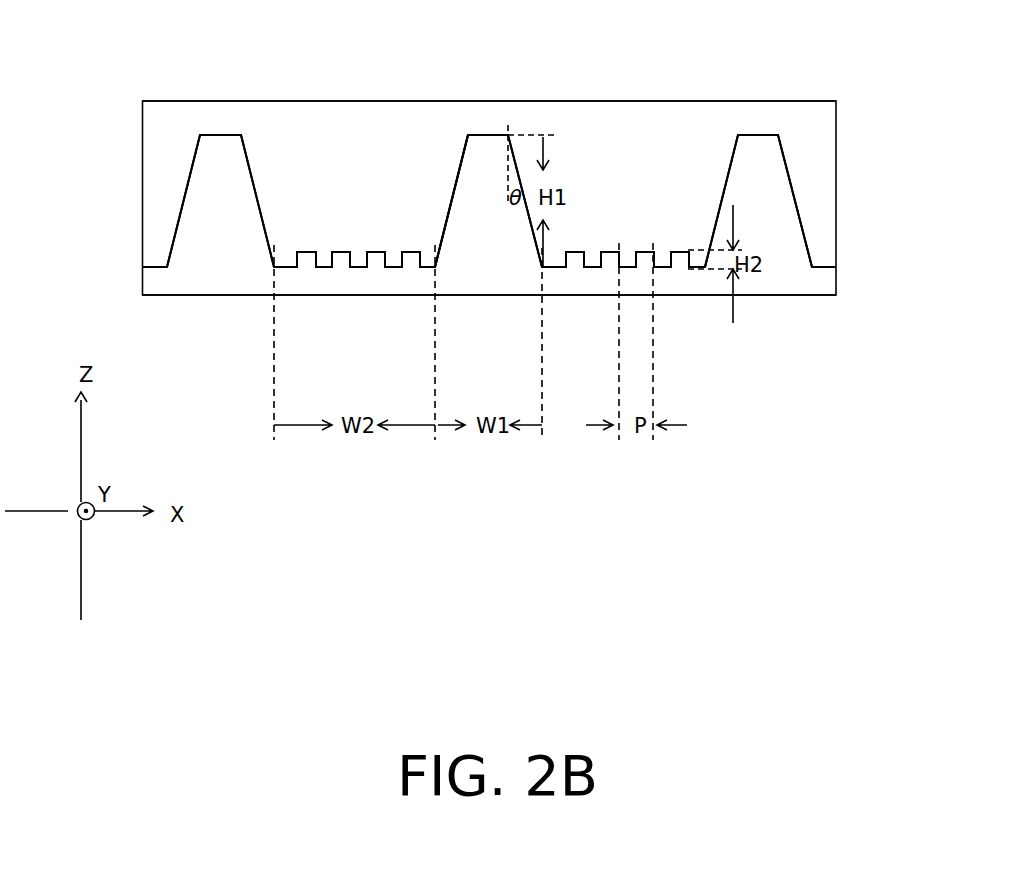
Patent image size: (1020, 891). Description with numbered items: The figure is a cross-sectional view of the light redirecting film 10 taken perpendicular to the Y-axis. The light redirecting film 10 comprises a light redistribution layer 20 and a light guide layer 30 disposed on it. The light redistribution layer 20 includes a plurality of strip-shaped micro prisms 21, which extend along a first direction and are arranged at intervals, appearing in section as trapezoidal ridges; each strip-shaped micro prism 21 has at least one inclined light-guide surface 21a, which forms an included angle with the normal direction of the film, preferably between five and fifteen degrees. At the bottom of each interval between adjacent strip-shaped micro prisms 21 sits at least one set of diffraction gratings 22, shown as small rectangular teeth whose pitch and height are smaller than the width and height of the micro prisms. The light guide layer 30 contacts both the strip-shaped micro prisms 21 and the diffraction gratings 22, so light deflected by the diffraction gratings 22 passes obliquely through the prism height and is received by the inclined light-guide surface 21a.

The light redirecting film 10 is at (114, 100).
The light redistribution layer 20 is at (820, 280).
The strip-shaped micro prism 21 is at (225, 162).
The inclined light-guide surface 21a is at (452, 200).
The diffraction grating 22 is at (343, 257).
The light guide layer 30 is at (820, 133).